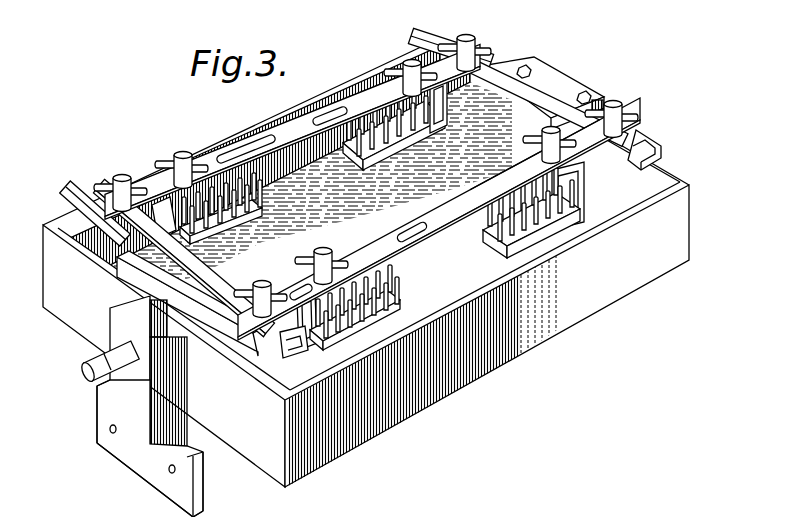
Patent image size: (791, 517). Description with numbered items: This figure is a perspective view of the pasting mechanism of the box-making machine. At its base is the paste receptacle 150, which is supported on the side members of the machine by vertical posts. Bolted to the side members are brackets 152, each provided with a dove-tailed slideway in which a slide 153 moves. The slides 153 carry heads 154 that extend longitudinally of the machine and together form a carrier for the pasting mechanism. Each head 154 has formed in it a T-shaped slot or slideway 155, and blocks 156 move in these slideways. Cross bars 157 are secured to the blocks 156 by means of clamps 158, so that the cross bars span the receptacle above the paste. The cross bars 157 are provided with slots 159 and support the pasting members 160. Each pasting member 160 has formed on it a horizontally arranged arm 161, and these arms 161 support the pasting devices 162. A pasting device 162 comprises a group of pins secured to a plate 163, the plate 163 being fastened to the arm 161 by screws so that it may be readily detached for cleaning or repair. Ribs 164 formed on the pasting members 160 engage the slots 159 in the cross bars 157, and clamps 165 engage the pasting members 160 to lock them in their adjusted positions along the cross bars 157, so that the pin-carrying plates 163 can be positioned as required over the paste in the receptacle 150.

The paste receptacle 150 is at (508, 354).
The bracket 152 is at (115, 402).
The slide 153 is at (572, 76).
The head 154 is at (280, 240).
The T-shaped slot 155 is at (80, 186).
The block 156 is at (282, 332).
The cross bar 157 is at (293, 127).
The clamp 158 is at (126, 176).
The slot 159 is at (263, 147).
The pasting member 160 is at (566, 193).
The arm 161 is at (397, 311).
The pasting device 162 is at (458, 123).
The plate 163 is at (352, 163).
The rib 164 is at (540, 166).
The clamp 165 is at (184, 154).